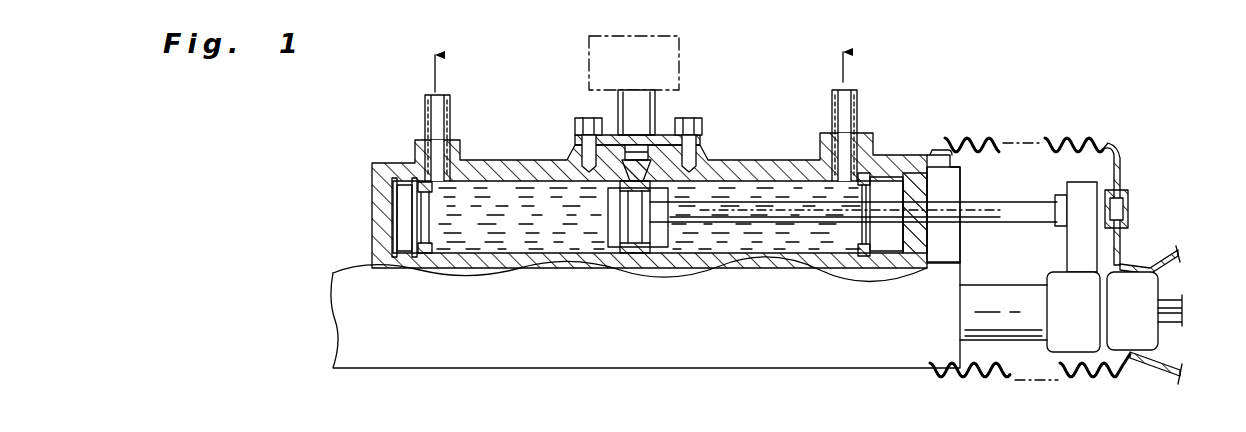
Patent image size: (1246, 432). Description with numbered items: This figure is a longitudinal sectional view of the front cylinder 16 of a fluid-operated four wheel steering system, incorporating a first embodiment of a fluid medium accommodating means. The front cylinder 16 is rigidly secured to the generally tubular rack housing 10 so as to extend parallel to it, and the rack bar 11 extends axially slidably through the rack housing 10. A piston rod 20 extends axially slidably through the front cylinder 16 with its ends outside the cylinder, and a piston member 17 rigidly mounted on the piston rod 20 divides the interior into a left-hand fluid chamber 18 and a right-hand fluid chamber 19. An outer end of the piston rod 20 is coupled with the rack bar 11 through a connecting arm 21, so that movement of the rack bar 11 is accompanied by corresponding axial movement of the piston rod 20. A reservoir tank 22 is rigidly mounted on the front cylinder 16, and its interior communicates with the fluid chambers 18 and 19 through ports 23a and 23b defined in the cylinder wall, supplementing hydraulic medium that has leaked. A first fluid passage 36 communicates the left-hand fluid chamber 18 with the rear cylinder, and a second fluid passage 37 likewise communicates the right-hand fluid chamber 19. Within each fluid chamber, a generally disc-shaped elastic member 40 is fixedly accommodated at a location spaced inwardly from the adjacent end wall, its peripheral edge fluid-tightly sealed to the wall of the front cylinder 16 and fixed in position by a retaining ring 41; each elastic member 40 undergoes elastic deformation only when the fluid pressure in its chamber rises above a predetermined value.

The rack housing 10 is at (575, 360).
The rack bar 11 is at (1005, 318).
The front cylinder 16 is at (783, 182).
The piston member 17 is at (638, 232).
The left-hand fluid chamber 18 is at (540, 254).
The right-hand fluid chamber 19 is at (745, 240).
The piston rod 20 is at (995, 212).
The connecting arm 21 is at (1074, 286).
The reservoir tank 22 is at (679, 46).
The port 23a is at (600, 138).
The port 23b is at (676, 152).
The first fluid passage 36 is at (435, 118).
The second fluid passage 37 is at (845, 110).
The elastic member 40 is at (420, 224).
The retaining ring 41 is at (412, 272).